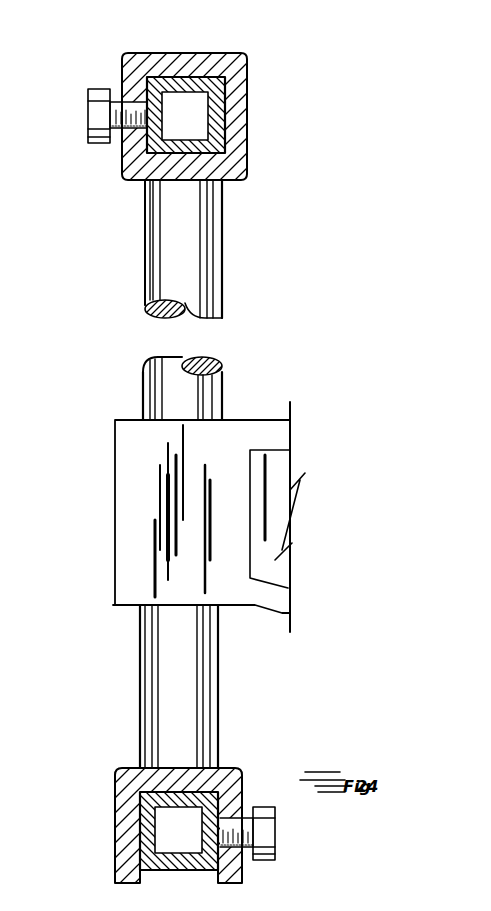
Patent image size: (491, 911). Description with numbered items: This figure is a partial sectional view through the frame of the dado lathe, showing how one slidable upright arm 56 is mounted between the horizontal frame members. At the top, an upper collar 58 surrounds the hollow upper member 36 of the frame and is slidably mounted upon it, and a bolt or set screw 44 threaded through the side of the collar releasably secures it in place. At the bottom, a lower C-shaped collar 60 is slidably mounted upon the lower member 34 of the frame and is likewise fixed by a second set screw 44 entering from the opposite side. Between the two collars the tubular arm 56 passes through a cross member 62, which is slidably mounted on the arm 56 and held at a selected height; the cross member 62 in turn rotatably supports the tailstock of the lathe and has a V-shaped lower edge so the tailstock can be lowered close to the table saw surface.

The lower member 34 is at (147, 795).
The upper member 36 is at (198, 83).
The set screw 44 is at (97, 92).
The upright arm 56 is at (192, 247).
The upper collar 58 is at (243, 70).
The lower C-shaped collar 60 is at (235, 772).
The cross member 62 is at (252, 425).